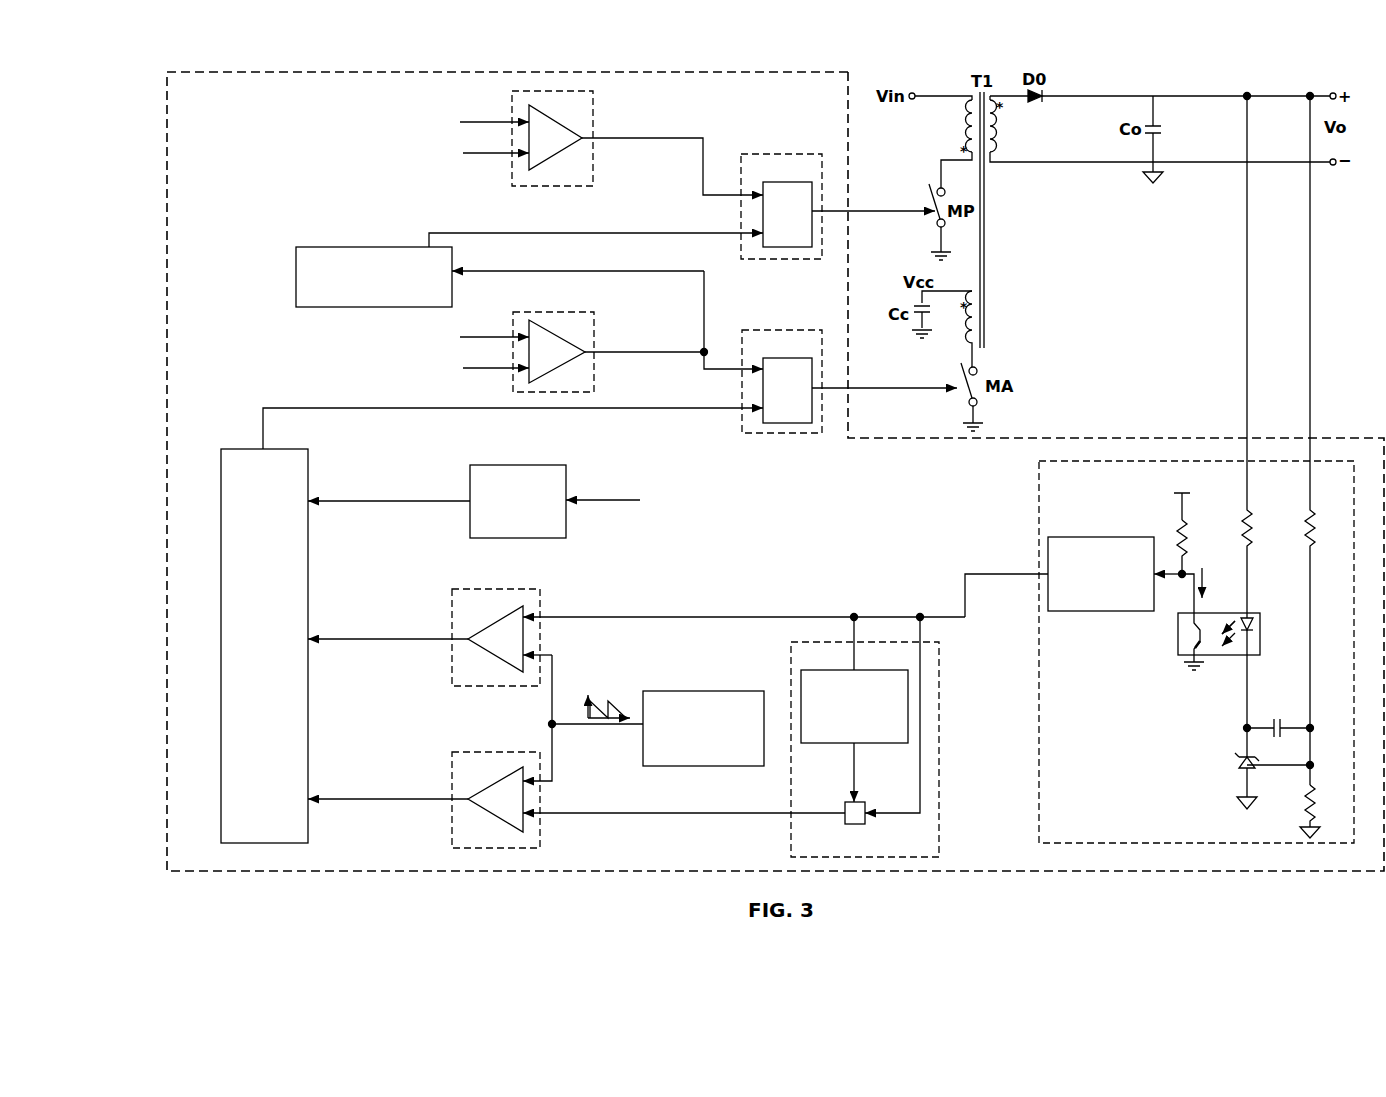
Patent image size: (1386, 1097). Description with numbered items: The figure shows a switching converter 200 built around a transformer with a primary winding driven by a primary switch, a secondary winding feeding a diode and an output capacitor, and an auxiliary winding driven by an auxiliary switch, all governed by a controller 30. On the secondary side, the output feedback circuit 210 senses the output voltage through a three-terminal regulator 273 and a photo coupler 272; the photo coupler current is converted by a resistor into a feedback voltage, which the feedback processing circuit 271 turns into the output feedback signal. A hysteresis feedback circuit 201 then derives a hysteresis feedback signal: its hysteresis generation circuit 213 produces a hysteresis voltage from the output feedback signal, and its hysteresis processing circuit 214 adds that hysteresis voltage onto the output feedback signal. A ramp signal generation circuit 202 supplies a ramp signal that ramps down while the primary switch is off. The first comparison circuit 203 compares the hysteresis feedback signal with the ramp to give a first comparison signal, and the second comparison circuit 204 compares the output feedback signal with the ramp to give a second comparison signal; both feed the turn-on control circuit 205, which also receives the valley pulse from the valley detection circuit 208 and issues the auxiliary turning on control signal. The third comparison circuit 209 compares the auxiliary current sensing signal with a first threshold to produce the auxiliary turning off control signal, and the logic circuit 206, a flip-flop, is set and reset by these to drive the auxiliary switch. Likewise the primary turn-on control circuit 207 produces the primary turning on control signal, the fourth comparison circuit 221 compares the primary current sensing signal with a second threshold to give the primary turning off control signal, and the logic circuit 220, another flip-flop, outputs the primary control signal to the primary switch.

The switching converter 200 is at (198, 40).
The controller 30 is at (1095, 440).
The fourth comparison circuit 221 is at (598, 112).
The logic circuit 220 is at (764, 155).
The primary turn-on control circuit 207 is at (338, 307).
The third comparison circuit 209 is at (595, 325).
The logic circuit 206 is at (772, 331).
The turn-on control circuit 205 is at (221, 740).
The valley detection circuit 208 is at (470, 530).
The second comparison circuit 204 is at (452, 680).
The first comparison circuit 203 is at (452, 837).
The ramp signal generation circuit 202 is at (643, 766).
The hysteresis feedback circuit 201 is at (791, 835).
The hysteresis generation circuit 213 is at (845, 743).
The hysteresis processing circuit 214 is at (853, 824).
The output feedback circuit 210 is at (1039, 695).
The feedback processing circuit 271 is at (1086, 611).
The photo coupler 272 is at (1178, 638).
The three-terminal regulator 273 is at (1242, 776).